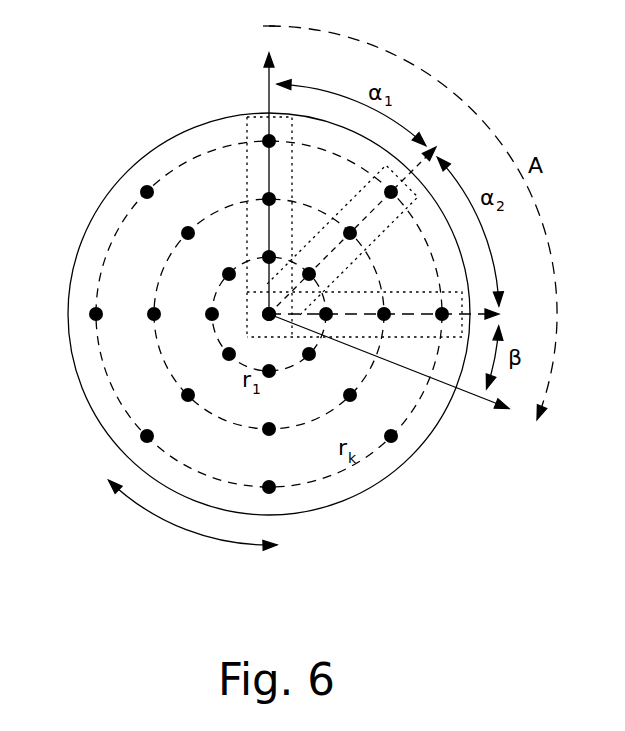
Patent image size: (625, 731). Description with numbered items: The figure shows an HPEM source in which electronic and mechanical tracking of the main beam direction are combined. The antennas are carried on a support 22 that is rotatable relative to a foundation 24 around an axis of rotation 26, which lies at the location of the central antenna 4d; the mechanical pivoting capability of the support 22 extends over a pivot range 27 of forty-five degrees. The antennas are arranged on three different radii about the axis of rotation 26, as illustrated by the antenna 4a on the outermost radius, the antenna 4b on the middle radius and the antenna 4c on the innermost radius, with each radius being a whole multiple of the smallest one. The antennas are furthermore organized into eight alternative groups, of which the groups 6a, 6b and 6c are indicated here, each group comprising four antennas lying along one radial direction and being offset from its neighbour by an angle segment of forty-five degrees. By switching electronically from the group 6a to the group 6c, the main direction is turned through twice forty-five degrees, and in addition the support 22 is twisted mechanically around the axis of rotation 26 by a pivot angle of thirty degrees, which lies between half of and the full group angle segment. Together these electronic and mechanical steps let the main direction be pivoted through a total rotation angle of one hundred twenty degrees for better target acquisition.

The antenna 4a is at (142, 190).
The antenna 4b is at (190, 227).
The antenna 4c is at (228, 270).
The antenna 4d is at (262, 318).
The group 6a is at (246, 120).
The group 6b is at (420, 195).
The group 6c is at (463, 308).
The support 22 is at (198, 125).
The foundation 24 is at (112, 136).
The axis of rotation 26 is at (272, 320).
The pivot range 27 is at (138, 505).